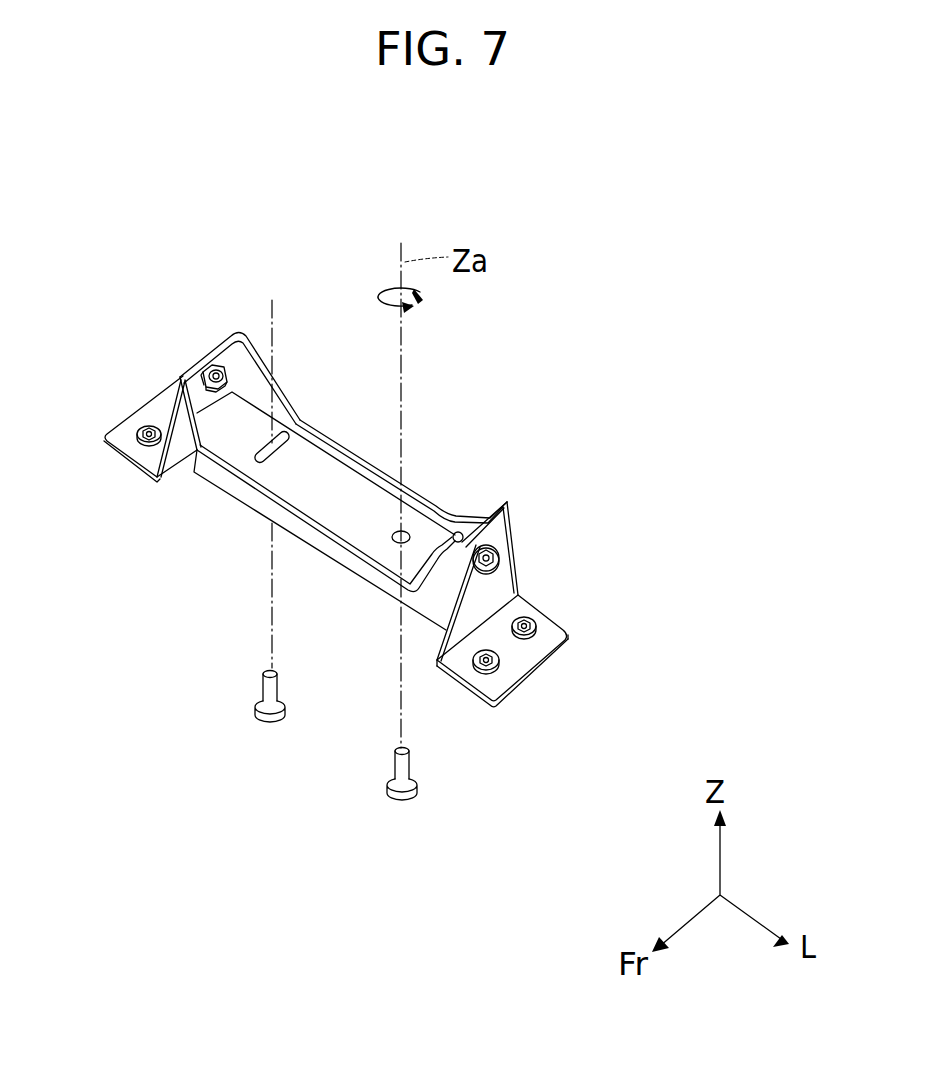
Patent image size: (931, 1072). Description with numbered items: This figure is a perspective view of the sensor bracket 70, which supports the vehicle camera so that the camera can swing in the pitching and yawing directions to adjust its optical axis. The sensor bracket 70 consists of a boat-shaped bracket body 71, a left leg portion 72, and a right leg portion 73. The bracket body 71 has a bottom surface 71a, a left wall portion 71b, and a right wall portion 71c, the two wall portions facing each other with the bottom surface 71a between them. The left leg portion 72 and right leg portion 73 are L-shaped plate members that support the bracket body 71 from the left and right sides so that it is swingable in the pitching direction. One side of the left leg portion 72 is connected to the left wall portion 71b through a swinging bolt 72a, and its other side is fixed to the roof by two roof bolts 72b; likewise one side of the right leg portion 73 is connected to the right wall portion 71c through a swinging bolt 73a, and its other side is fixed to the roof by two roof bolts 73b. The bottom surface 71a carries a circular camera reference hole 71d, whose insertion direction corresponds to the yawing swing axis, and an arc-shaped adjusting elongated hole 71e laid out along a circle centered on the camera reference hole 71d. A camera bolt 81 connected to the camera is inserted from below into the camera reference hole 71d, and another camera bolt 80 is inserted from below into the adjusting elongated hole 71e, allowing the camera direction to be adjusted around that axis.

The sensor bracket 70 is at (594, 247).
The bracket body 71 is at (228, 482).
The bottom surface 71a is at (347, 528).
The left wall portion 71b is at (513, 522).
The right wall portion 71c is at (233, 352).
The camera reference hole 71d is at (405, 532).
The adjusting elongated hole 71e is at (291, 430).
The left leg portion 72 is at (513, 580).
The swinging bolt 72a is at (510, 558).
The roof bolts 72b is at (492, 658).
The right leg portion 73 is at (115, 450).
The swinging bolt 73a is at (212, 360).
The roof bolts 73b is at (147, 422).
The camera bolt 80 is at (272, 728).
The camera bolt 81 is at (402, 806).